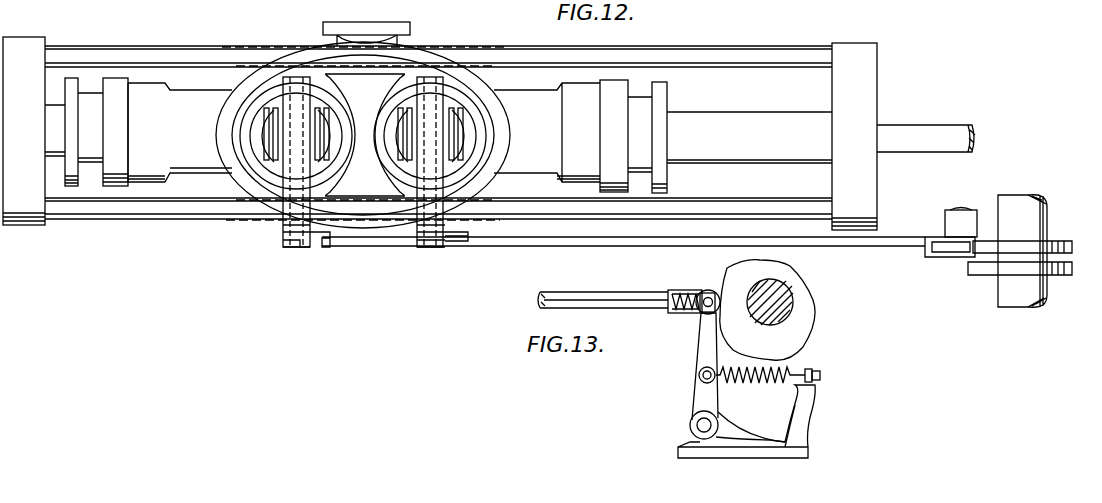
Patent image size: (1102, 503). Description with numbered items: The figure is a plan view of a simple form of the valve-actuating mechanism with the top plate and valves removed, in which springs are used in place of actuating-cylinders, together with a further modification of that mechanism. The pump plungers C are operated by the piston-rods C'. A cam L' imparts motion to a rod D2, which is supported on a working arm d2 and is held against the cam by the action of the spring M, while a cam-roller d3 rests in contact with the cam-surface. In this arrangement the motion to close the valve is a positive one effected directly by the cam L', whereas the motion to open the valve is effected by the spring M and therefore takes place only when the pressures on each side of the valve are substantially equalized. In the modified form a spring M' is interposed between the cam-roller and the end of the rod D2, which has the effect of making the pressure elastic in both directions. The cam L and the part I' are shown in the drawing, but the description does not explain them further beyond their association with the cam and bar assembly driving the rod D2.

In FIG. 12, the plunger C is at (438, 135).
In FIG. 12, the piston-rod C' is at (825, 139).
In FIG. 12, the rod D2 is at (905, 238).
In FIG. 13, the rod D2 is at (617, 285).
In FIG. 12, the cam L' is at (1022, 238).
In FIG. 12, the bar I' is at (1020, 251).
In FIG. 13, the spring M' is at (682, 290).
In FIG. 13, the cam-roller d3 is at (709, 291).
In FIG. 13, the working arm d2 is at (700, 350).
In FIG. 13, the cam L is at (767, 310).
In FIG. 13, the spring M is at (768, 385).